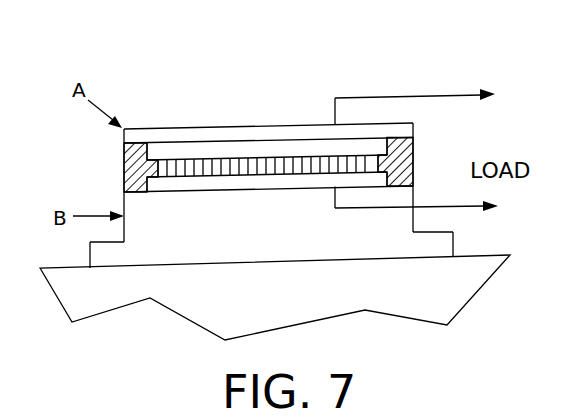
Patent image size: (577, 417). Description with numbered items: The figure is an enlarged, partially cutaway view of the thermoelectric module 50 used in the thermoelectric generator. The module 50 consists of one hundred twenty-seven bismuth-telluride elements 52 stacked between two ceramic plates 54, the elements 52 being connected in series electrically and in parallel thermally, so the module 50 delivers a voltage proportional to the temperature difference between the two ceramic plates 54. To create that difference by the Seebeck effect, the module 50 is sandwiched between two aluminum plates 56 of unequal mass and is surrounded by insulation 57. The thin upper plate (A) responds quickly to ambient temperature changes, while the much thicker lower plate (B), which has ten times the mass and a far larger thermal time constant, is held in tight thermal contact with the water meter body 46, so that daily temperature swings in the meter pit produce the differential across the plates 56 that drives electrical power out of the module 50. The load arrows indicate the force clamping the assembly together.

The thermoelectric module 50 is at (158, 120).
The bismuth-telluride elements 52 is at (287, 165).
The ceramic plates 54 is at (231, 186).
The aluminum plates 56 is at (175, 208).
The insulation 57 is at (124, 156).
The meter body 46 is at (275, 336).